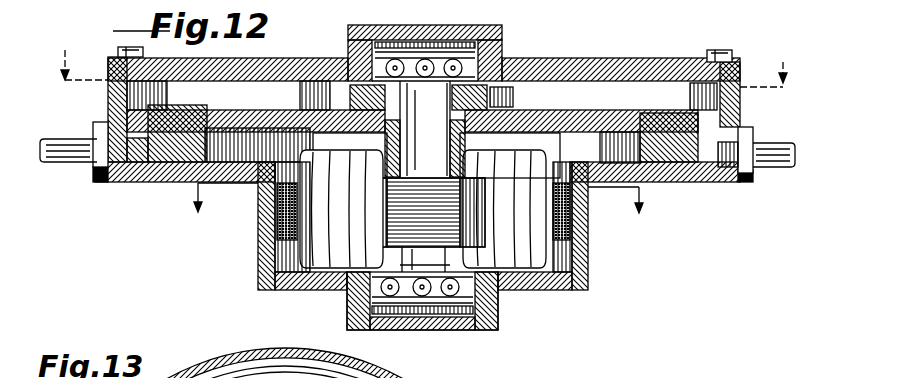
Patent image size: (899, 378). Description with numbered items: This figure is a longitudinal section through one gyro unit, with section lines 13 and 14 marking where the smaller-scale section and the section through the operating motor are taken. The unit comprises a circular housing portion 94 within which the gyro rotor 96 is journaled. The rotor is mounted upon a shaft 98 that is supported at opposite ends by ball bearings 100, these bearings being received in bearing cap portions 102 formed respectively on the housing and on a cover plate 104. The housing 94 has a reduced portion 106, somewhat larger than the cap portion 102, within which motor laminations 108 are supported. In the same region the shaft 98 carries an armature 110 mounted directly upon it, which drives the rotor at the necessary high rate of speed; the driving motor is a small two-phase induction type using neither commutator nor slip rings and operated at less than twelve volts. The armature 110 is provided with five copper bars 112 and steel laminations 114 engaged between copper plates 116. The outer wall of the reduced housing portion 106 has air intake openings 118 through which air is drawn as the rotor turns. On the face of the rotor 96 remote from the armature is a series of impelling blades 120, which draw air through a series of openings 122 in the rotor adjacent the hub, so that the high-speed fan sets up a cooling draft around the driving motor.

The section line 13- 13 is at (417, 82).
The section line 14- 14 is at (416, 212).
The circular housing portion 94 is at (703, 186).
The gyro rotor 96 is at (692, 120).
The shaft 98 is at (518, 122).
The ball bearings 100 is at (503, 60).
The bearing cap portions 102 is at (368, 27).
The cover plate 104 is at (288, 70).
The reduced portion 106 is at (587, 243).
The motor laminations 108 is at (262, 263).
The armature 110 is at (358, 238).
The copper bars 112 is at (505, 283).
The steel laminations 114 is at (575, 260).
The copper plates 116 is at (487, 190).
The air intake openings 118 is at (562, 288).
The impelling blades 120 is at (617, 98).
The openings 122 is at (535, 118).